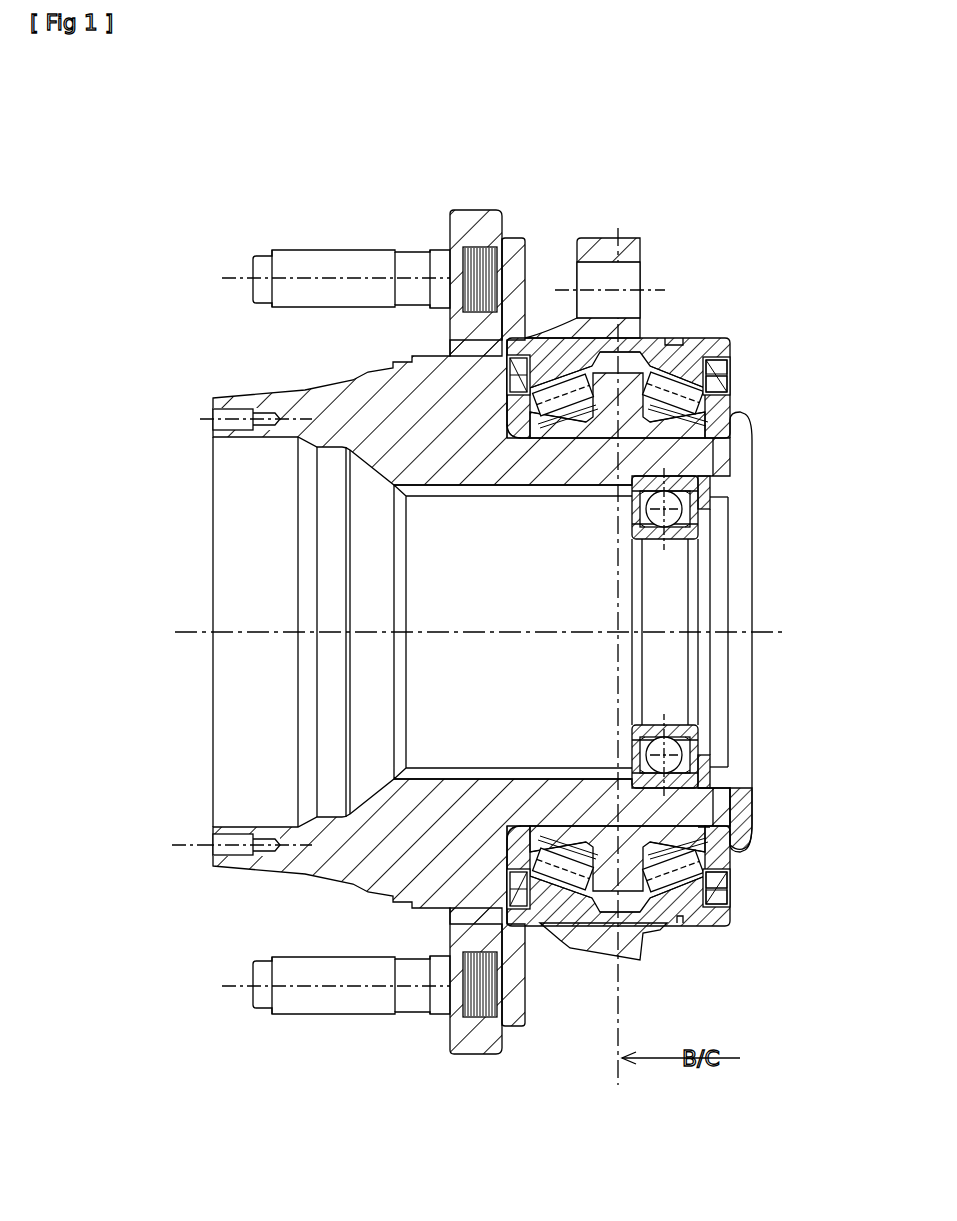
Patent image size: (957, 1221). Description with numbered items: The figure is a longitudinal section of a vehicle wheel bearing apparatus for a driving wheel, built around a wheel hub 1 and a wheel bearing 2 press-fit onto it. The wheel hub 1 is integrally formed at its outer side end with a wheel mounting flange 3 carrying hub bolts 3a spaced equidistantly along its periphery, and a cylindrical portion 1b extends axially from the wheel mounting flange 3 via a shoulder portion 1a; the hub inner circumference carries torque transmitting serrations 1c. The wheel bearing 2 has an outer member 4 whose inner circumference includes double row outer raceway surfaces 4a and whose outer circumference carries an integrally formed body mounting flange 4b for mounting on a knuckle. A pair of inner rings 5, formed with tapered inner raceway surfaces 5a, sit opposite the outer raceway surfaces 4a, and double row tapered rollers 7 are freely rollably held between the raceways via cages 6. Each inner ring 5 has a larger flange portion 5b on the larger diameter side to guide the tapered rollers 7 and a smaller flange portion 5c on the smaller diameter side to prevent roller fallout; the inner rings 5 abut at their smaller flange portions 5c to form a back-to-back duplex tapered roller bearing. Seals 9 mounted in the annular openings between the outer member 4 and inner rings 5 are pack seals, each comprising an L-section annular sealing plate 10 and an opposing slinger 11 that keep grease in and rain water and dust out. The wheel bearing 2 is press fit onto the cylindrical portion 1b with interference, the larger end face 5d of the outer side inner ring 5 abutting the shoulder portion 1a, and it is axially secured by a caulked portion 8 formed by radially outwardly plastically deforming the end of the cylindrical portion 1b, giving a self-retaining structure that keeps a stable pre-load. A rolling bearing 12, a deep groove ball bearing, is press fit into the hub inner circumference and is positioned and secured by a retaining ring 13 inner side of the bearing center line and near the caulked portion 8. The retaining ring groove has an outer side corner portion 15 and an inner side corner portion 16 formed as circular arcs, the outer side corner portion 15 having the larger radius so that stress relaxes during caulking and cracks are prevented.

The wheel hub 1 is at (343, 408).
The shoulder portion 1a is at (520, 865).
The cylindrical portion 1b is at (525, 440).
The torque transmitting serrations 1c is at (440, 497).
The wheel bearing 2 is at (698, 308).
The wheel mounting flange 3 is at (468, 215).
The hub bolts 3a is at (342, 262).
The outer member 4 is at (645, 352).
The outer raceway surfaces 4a is at (540, 392).
The body mounting flange 4b is at (605, 232).
The inner rings 5 is at (732, 420).
The inner raceway surfaces 5a is at (705, 423).
The larger flange portion 5b is at (535, 392).
The smaller flange portion 5c is at (622, 445).
The larger end face 5d is at (465, 863).
The cages 6 is at (610, 855).
The tapered rollers 7 is at (648, 878).
The caulked portion 8 is at (740, 832).
The seals 9 is at (510, 372).
The annular sealing plate 10 is at (733, 355).
The slinger 11 is at (733, 375).
The rolling bearing 12 is at (702, 753).
The retaining ring 13 is at (710, 768).
The outer side corner portion 15 is at (707, 505).
The inner side corner portion 16 is at (710, 484).